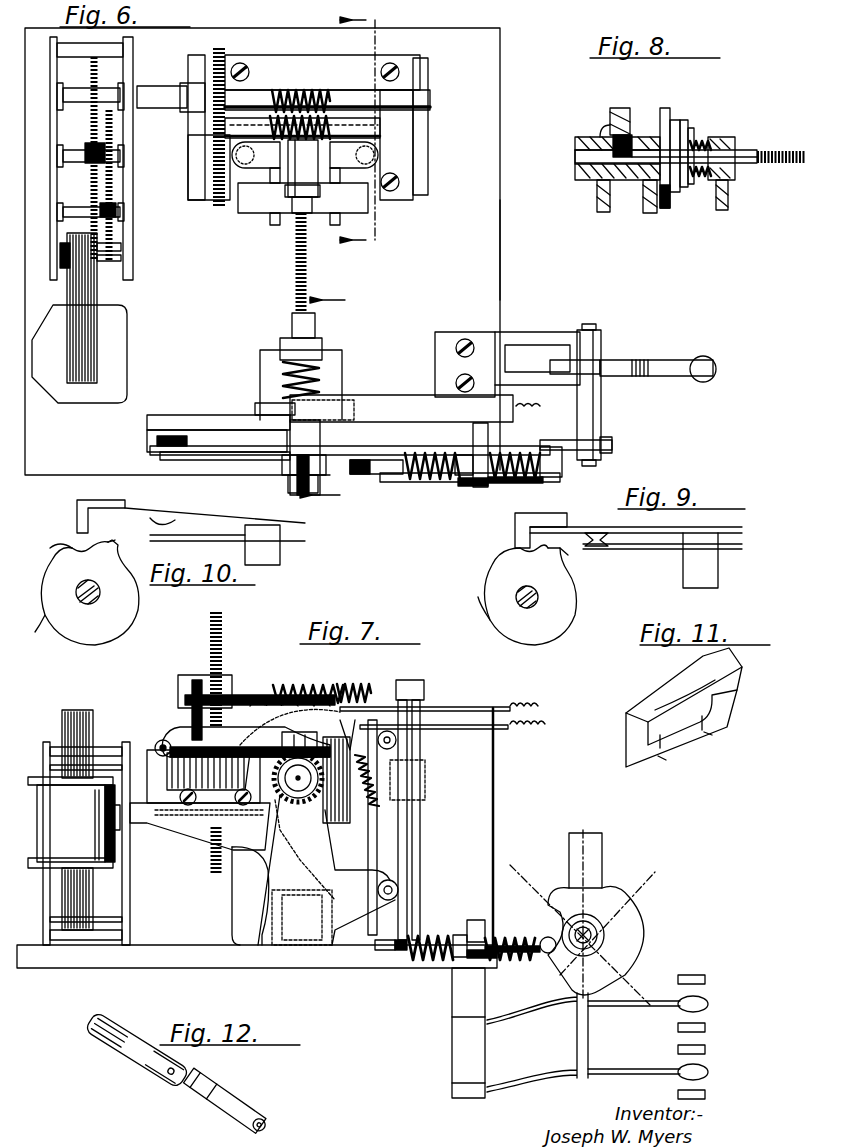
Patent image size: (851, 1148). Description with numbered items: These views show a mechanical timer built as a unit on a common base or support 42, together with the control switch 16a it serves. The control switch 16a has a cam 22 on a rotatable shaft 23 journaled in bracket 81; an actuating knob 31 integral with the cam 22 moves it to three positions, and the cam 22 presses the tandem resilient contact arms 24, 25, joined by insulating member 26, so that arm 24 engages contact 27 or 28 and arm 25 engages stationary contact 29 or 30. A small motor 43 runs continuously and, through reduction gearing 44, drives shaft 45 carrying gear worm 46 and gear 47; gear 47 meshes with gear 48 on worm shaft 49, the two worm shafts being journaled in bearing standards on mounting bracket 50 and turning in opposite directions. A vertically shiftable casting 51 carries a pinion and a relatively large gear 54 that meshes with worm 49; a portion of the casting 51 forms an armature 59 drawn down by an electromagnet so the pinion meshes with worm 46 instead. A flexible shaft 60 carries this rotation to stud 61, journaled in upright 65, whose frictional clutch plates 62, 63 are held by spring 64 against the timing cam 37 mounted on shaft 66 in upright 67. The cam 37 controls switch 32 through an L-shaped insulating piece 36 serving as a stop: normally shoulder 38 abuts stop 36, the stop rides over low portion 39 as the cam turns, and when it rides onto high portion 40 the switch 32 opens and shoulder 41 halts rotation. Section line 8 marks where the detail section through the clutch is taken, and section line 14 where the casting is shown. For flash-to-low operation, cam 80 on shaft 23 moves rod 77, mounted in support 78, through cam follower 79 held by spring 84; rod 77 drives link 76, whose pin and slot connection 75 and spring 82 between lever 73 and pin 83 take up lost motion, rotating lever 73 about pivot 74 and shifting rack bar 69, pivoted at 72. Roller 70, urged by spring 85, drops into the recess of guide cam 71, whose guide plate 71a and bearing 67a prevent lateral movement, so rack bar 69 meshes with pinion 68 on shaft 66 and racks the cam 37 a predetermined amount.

In FIG. 6, the section line 8 is at (330, 398).
In FIG. 6, the section line 14 is at (373, 129).
In FIG. 7, the manually-operable control switch 16a is at (700, 947).
In FIG. 6, the cam 22 is at (628, 360).
In FIG. 7, the cam 22 is at (630, 920).
In FIG. 6, the rotatable shaft 23 is at (590, 328).
In FIG. 7, the rotatable shaft 23 is at (622, 978).
In FIG. 6, the resilient contact arm 24 is at (690, 360).
In FIG. 7, the resilient contact arm 24 is at (620, 1006).
In FIG. 7, the resilient contact arm 25 is at (640, 1070).
In FIG. 7, the insulating member 26 is at (575, 1035).
In FIG. 7, the contact 27 is at (705, 1027).
In FIG. 7, the contact 28 is at (705, 980).
In FIG. 7, the stationary contact 29 is at (705, 1092).
In FIG. 7, the stationary contact 30 is at (705, 1050).
In FIG. 6, the actuating knob 31 is at (600, 365).
In FIG. 7, the actuating knob 31 is at (602, 847).
In FIG. 10, the switch 32 is at (200, 536).
In FIG. 9, the switch 32 is at (665, 540).
In FIG. 7, the switch 32 is at (440, 725).
In FIG. 10, the L-shaped insulating piece 36 is at (75, 510).
In FIG. 9, the L-shaped insulating piece 36 is at (553, 513).
In FIG. 6, the rotatable cam 37 is at (255, 409).
In FIG. 8, the rotatable cam 37 is at (675, 118).
In FIG. 10, the rotatable cam 37 is at (125, 607).
In FIG. 9, the rotatable cam 37 is at (565, 585).
In FIG. 10, the shoulder 38 is at (50, 550).
In FIG. 9, the shoulder 38 is at (515, 530).
In FIG. 10, the low portion 39 is at (33, 631).
In FIG. 9, the low portion 39 is at (478, 597).
In FIG. 10, the high portion 40 is at (108, 540).
In FIG. 9, the high portion 40 is at (570, 557).
In FIG. 10, the shoulder 41 is at (95, 565).
In FIG. 9, the shoulder 41 is at (555, 560).
In FIG. 6, the base or support 42 is at (500, 222).
In FIG. 7, the base or support 42 is at (262, 968).
In FIG. 6, the motor 43 is at (110, 332).
In FIG. 7, the motor 43 is at (78, 823).
In FIG. 6, the reduction gearing 44 is at (115, 185).
In FIG. 6, the shaft 45 is at (255, 97).
In FIG. 6, the gear worm 46 is at (305, 88).
In FIG. 7, the gear 47 is at (208, 870).
In FIG. 6, the gear 48 is at (218, 210).
In FIG. 7, the gear 48 is at (222, 640).
In FIG. 6, the worm shaft 49 is at (290, 150).
In FIG. 7, the worm shaft 49 is at (285, 685).
In FIG. 6, the mounting bracket 50 is at (352, 72).
In FIG. 6, the vertically shiftable casting 51 is at (352, 162).
In FIG. 7, the gear 54 is at (396, 745).
In FIG. 6, the armature 59 is at (260, 207).
In FIG. 6, the flexible shaft 60 is at (296, 283).
In FIG. 8, the flexible shaft 60 is at (790, 165).
In FIG. 8, the stud or shaft 61 is at (745, 150).
In FIG. 6, the frictional clutch plate 62 is at (330, 392).
In FIG. 8, the frictional clutch plate 62 is at (696, 135).
In FIG. 6, the frictional clutch plate 63 is at (270, 397).
In FIG. 8, the frictional clutch plate 63 is at (686, 122).
In FIG. 6, the spring 64 is at (285, 380).
In FIG. 8, the spring 64 is at (700, 142).
In FIG. 6, the upright 65 is at (340, 352).
In FIG. 8, the upright 65 is at (728, 200).
In FIG. 6, the shaft 66 is at (315, 490).
In FIG. 8, the shaft 66 is at (660, 120).
In FIG. 10, the shaft 66 is at (88, 604).
In FIG. 9, the shaft 66 is at (523, 608).
In FIG. 7, the shaft 66 is at (303, 790).
In FIG. 8, the journal support or upright 67 is at (600, 195).
In FIG. 6, the bearing 67a is at (270, 494).
In FIG. 8, the bearing 67a is at (612, 118).
In FIG. 7, the bearing 67a is at (352, 670).
In FIG. 6, the pinion 68 is at (330, 452).
In FIG. 8, the pinion 68 is at (630, 132).
In FIG. 7, the pinion 68 is at (290, 870).
In FIG. 6, the rack bar 69 is at (232, 460).
In FIG. 7, the rack bar 69 is at (232, 735).
In FIG. 6, the roller 70 is at (155, 445).
In FIG. 7, the roller 70 is at (168, 740).
In FIG. 6, the guide cam 71 is at (147, 425).
In FIG. 11, the guide cam 71 is at (732, 700).
In FIG. 7, the guide cam 71 is at (160, 758).
In FIG. 11, the guide plate 71a is at (680, 695).
In FIG. 7, the guide plate 71a is at (152, 755).
In FIG. 7, the pivot 72 is at (405, 680).
In FIG. 7, the lever 73 is at (392, 858).
In FIG. 7, the pivot 74 is at (398, 886).
In FIG. 7, the pin and slot connection 75 is at (390, 950).
In FIG. 6, the link 76 is at (430, 480).
In FIG. 7, the link 76 is at (425, 960).
In FIG. 12, the link 76 is at (100, 1043).
In FIG. 6, the reciprocable rod 77 is at (510, 484).
In FIG. 7, the reciprocable rod 77 is at (512, 945).
In FIG. 12, the reciprocable rod 77 is at (235, 1095).
In FIG. 6, the support 78 is at (470, 487).
In FIG. 7, the support 78 is at (474, 920).
In FIG. 6, the cam follower or roller 79 is at (547, 445).
In FIG. 7, the cam follower or roller 79 is at (548, 955).
In FIG. 6, the cam 80 is at (615, 445).
In FIG. 7, the cam 80 is at (575, 898).
In FIG. 6, the bracket 81 is at (512, 348).
In FIG. 6, the spring 82 is at (458, 455).
In FIG. 7, the spring 82 is at (455, 935).
In FIG. 6, the pin 83 is at (478, 455).
In FIG. 7, the pin 83 is at (478, 958).
In FIG. 6, the spring 84 is at (515, 450).
In FIG. 7, the spring 84 is at (505, 960).
In FIG. 6, the spring 85 is at (375, 475).
In FIG. 7, the spring 85 is at (380, 790).